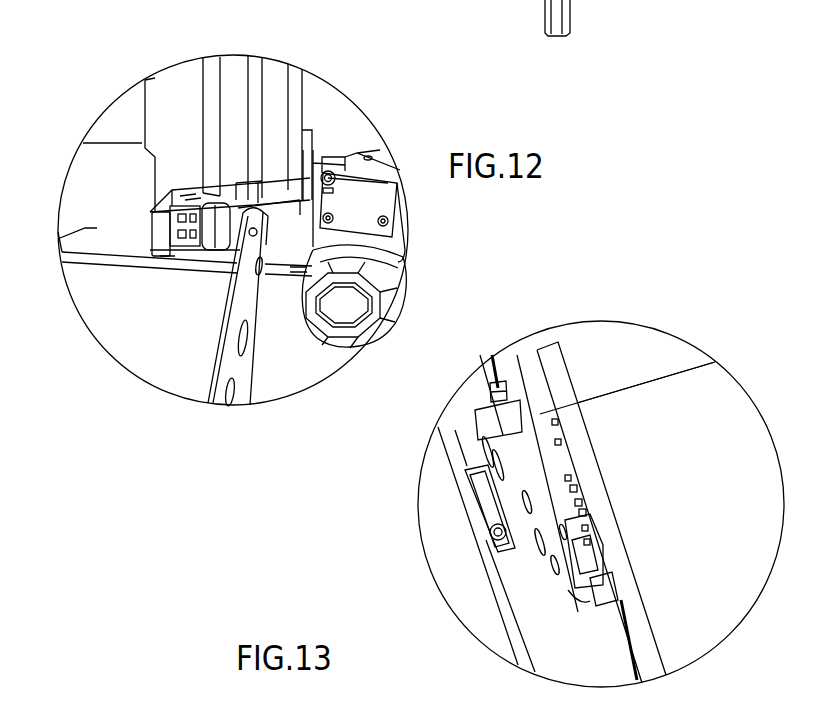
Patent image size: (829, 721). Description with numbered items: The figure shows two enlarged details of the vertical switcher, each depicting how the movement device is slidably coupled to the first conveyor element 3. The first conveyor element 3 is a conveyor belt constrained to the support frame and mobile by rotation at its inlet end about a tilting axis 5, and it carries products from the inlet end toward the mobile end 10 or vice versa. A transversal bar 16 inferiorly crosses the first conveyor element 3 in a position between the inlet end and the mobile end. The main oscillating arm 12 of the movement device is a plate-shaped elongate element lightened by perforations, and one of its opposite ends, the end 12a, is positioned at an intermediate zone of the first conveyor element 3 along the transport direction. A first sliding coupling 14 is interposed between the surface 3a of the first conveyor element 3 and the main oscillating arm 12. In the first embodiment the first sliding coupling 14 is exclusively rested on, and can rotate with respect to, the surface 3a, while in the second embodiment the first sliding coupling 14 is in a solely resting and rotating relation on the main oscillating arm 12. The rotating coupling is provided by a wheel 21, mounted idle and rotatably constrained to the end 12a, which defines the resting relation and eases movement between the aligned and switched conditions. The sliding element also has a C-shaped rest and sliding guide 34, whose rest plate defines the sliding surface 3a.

In FIG. 12, the first conveyor element 3 is at (130, 193).
In FIG. 13, the first conveyor element 3 is at (718, 428).
In FIG. 12, the surface 3a is at (242, 183).
In FIG. 12, the tilting axis 5 is at (470, 0).
In FIG. 12, the mobile end 10 is at (95, 227).
In FIG. 13, the mobile end 10 is at (612, 392).
In FIG. 12, the main oscillating arm 12 is at (238, 368).
In FIG. 13, the main oscillating arm 12 is at (517, 355).
In FIG. 13, the end of the main oscillating arm 12a is at (565, 585).
In FIG. 12, the first sliding coupling 14 is at (270, 219).
In FIG. 13, the first sliding coupling 14 is at (545, 559).
In FIG. 12, the transversal bar 16 is at (203, 262).
In FIG. 12, the wheel 21 is at (190, 200).
In FIG. 13, the wheel 21 is at (583, 512).
In FIG. 12, the rest and sliding guide 34 is at (308, 163).
In FIG. 13, the rest and sliding guide 34 is at (598, 598).